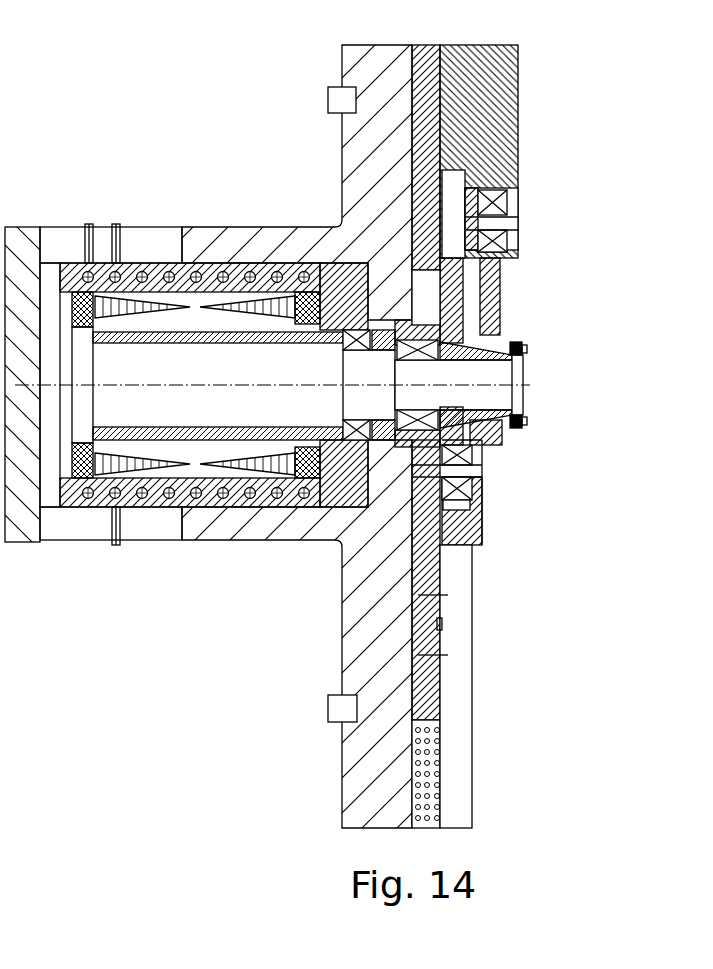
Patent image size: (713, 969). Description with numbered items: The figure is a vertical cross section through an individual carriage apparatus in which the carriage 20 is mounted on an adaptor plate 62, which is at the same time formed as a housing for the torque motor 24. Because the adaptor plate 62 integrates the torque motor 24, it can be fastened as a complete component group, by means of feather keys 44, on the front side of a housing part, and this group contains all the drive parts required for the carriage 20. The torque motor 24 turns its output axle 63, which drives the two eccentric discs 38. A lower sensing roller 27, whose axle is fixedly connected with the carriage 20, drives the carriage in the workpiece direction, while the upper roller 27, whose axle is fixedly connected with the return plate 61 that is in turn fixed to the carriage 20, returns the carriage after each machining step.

The carriage 20 is at (427, 558).
The torque motor 24 is at (323, 485).
The sensing rollers 27 is at (517, 195).
The eccentric discs 38 is at (465, 315).
The feather keys 44 is at (343, 97).
The return plate 61 is at (500, 110).
The adaptor plate 62 is at (362, 735).
The output axle 63 is at (508, 375).